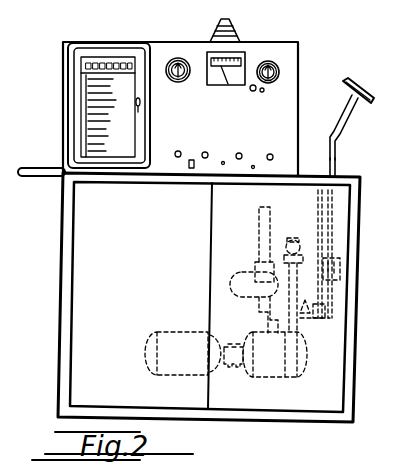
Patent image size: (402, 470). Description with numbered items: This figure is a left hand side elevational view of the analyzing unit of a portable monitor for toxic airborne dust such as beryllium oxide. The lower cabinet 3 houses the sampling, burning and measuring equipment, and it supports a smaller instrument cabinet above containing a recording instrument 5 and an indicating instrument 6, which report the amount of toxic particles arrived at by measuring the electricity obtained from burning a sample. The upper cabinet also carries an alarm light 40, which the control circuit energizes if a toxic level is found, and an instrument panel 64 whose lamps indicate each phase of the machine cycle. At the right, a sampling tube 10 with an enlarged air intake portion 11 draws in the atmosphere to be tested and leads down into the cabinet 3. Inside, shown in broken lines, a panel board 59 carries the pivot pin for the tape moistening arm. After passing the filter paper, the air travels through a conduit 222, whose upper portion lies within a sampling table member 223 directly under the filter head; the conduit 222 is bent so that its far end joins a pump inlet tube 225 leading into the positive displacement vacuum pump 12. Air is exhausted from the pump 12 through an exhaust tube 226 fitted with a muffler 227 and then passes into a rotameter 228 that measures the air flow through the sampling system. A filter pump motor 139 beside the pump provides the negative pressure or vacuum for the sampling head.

The cabinet 3 is at (58, 315).
The recording instrument 5 is at (121, 52).
The indicating instrument 6 is at (238, 53).
The sampling tube 10 is at (335, 159).
The enlarged air intake portion 11 is at (343, 115).
The vacuum pump 12 is at (280, 378).
The alarm light 40 is at (234, 23).
The panel board 59 is at (318, 199).
The instrument panel 64 is at (288, 108).
The filter pump motor 139 is at (179, 376).
The conduit 222 is at (332, 302).
The sampling table member 223 is at (342, 268).
The pump inlet tube 225 is at (298, 322).
The exhaust tube 226 is at (258, 314).
The muffler 227 is at (229, 283).
The rotameter 228 is at (258, 232).